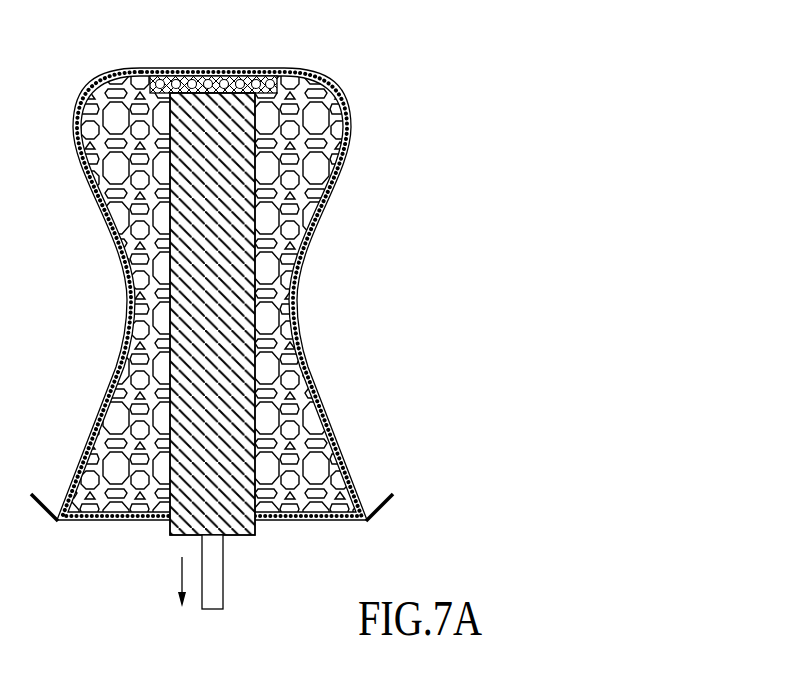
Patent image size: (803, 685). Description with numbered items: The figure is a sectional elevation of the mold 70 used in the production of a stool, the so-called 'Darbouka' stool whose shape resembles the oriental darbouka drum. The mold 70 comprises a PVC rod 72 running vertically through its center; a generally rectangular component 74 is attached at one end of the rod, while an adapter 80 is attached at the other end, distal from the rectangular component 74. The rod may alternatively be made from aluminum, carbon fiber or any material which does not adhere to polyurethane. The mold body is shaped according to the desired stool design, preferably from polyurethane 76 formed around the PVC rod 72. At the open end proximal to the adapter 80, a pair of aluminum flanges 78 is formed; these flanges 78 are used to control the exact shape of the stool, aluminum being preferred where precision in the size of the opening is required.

The mold 70 is at (370, 175).
The PVC rod 72 is at (233, 300).
The rectangular component 74 is at (246, 70).
The polyurethane 76 is at (308, 383).
The aluminum flanges 78 is at (390, 503).
The adapter 80 is at (223, 572).